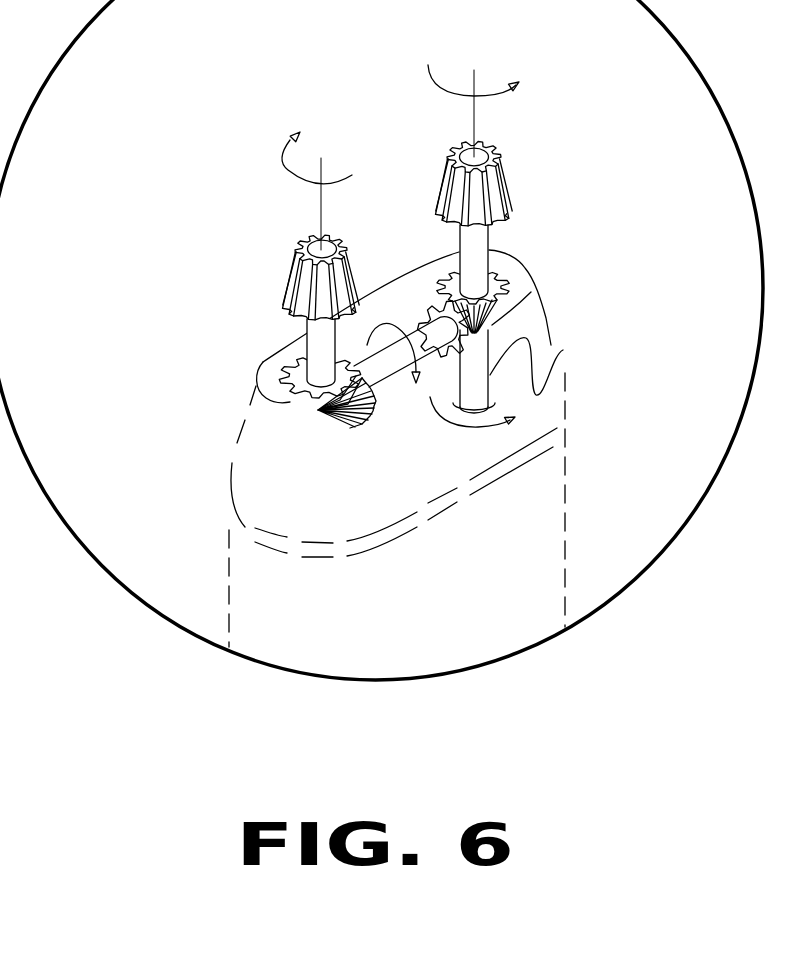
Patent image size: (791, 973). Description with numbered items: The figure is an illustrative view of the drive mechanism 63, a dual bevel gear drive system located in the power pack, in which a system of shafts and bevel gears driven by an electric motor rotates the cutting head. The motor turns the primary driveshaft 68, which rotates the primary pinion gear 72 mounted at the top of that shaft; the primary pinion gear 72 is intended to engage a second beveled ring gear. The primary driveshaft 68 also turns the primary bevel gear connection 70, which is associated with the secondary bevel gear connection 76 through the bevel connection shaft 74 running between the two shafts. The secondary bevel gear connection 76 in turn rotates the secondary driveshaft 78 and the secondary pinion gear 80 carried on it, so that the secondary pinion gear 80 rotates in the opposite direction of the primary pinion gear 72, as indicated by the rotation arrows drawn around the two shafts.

The drive mechanism 63 is at (257, 158).
The primary driveshaft 68 is at (473, 402).
The primary bevel gear connection 70 is at (420, 268).
The primary pinion gear 72 is at (505, 184).
The bevel connection shaft 74 is at (404, 358).
The secondary bevel gear connection 76 is at (314, 437).
The secondary driveshaft 78 is at (312, 350).
The secondary pinion gear 80 is at (288, 291).